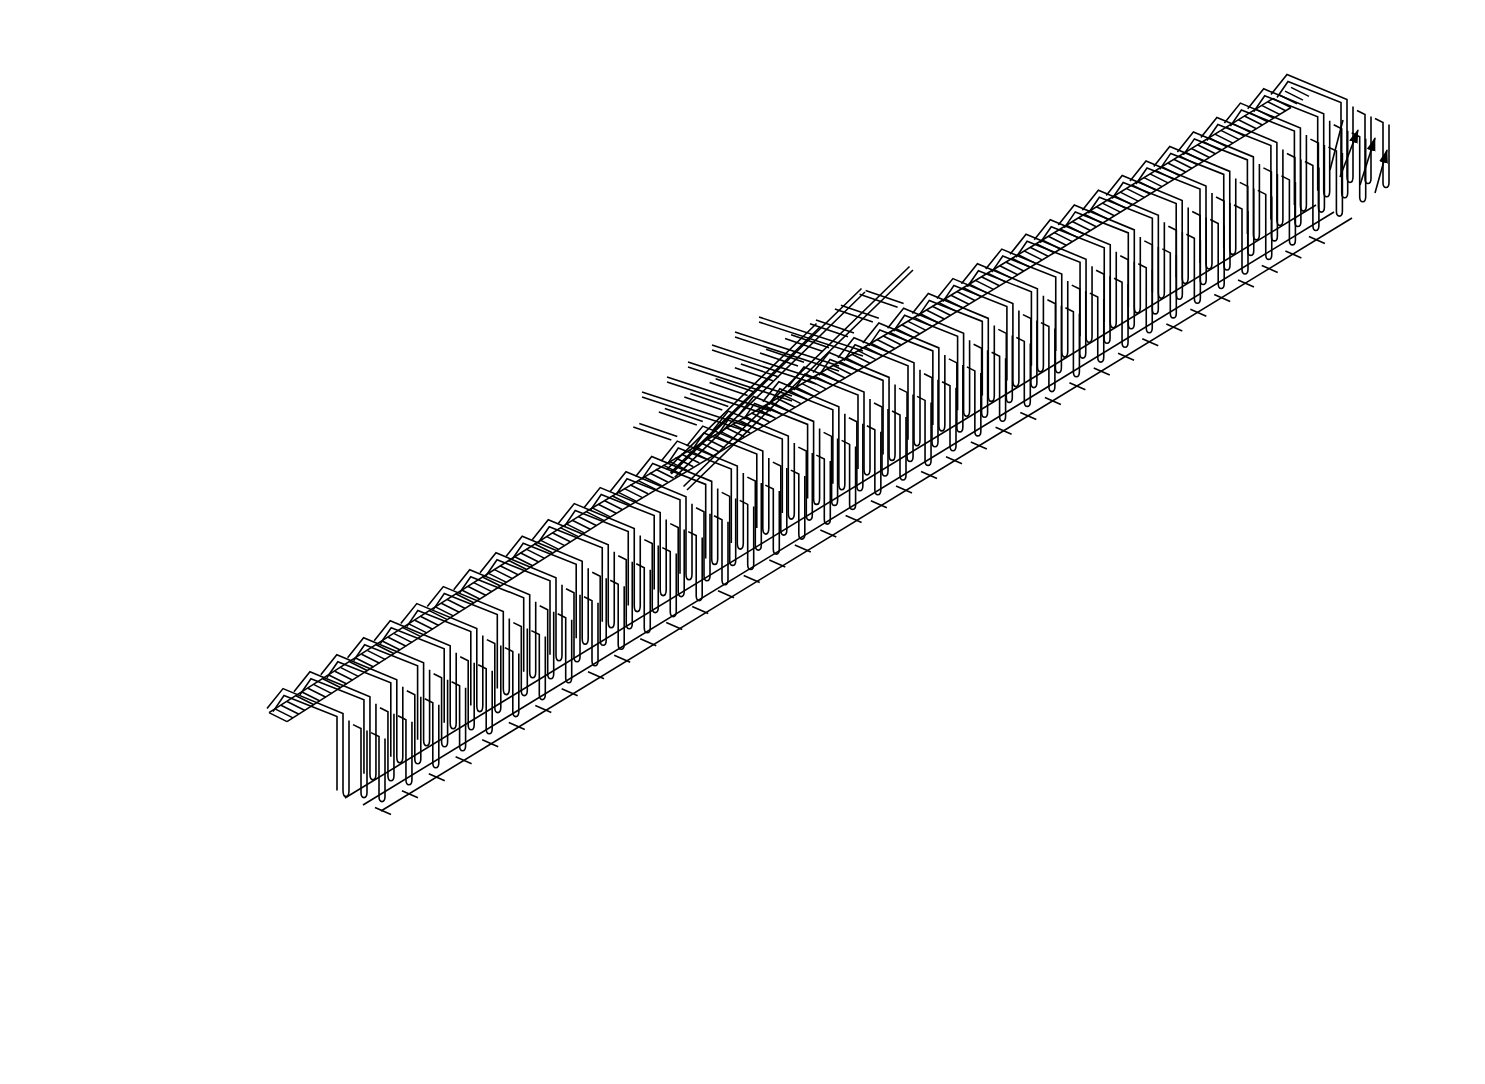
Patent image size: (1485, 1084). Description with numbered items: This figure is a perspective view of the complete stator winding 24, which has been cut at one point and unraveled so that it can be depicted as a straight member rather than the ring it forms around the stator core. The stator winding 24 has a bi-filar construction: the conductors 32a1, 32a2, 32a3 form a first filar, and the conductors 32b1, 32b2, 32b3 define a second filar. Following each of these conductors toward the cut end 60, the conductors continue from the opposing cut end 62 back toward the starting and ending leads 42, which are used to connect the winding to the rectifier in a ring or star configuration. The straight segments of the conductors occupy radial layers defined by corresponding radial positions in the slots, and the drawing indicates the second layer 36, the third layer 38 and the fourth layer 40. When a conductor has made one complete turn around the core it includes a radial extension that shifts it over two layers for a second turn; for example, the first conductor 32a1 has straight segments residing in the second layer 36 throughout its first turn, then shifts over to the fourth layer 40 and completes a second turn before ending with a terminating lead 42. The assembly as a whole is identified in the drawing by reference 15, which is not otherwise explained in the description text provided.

The stator winding 24 is at (556, 226).
The opposing cut end 62 is at (265, 683).
The cut end 60 is at (1308, 75).
The connector assembly 15 is at (1126, 576).
The starting and ending lead 42 is at (820, 326).
The first conductor 32a1 is at (636, 395).
The conductor 32a2 is at (658, 373).
The conductor 32a3 is at (682, 359).
The conductor 32b1 is at (708, 344).
The conductor 32b2 is at (732, 329).
The conductor 32b3 is at (797, 265).
The second layer 36 is at (1332, 166).
The third layer 38 is at (1322, 145).
The fourth layer 40 is at (1345, 180).